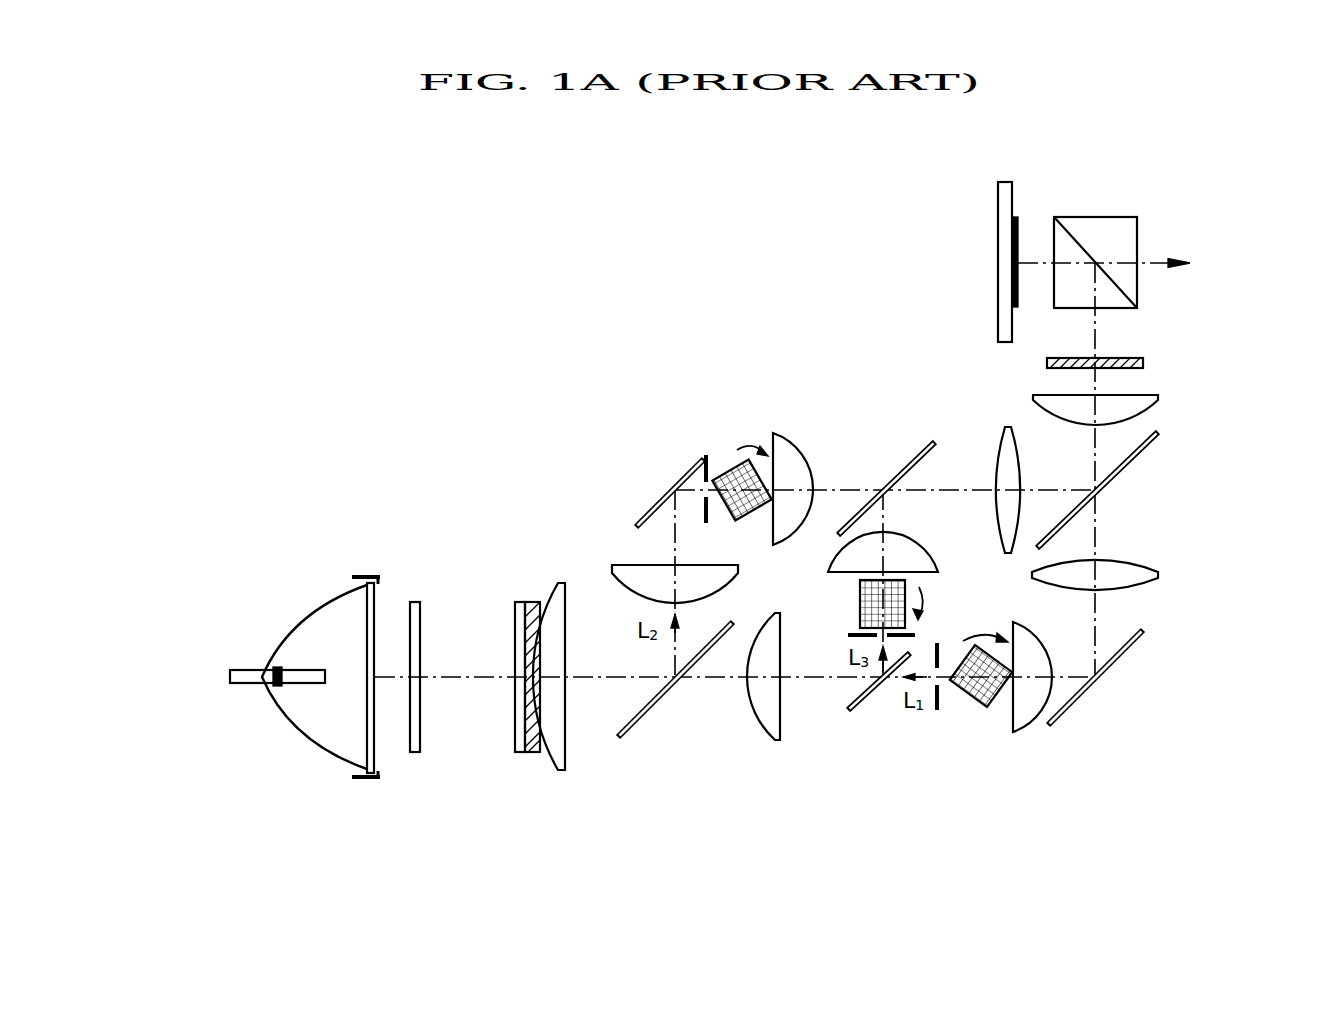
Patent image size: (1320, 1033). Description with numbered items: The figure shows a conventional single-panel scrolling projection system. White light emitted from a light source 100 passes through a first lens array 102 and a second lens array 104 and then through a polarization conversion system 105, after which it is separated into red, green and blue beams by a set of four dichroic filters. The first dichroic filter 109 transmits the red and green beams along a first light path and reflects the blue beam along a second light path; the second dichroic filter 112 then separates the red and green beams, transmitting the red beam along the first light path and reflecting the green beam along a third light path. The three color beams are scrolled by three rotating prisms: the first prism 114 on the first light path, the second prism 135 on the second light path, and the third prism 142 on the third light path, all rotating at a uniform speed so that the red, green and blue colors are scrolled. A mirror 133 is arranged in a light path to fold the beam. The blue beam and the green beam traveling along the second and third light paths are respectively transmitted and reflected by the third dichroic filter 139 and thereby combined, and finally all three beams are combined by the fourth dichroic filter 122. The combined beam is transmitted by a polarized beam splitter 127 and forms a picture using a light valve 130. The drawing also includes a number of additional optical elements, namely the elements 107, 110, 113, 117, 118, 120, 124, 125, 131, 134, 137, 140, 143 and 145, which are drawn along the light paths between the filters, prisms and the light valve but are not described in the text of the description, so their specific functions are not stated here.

The light source 100 is at (317, 625).
The first lens array 102 is at (415, 602).
The second lens array 104 is at (517, 752).
The polarization conversion system 105 is at (532, 752).
The collimating lens 107 is at (557, 743).
The first dichroic filter 109 is at (653, 705).
The lens 110 is at (778, 742).
The second dichroic filter 112 is at (860, 702).
The slit 113 is at (937, 713).
The first prism 114 is at (987, 707).
The lens 117 is at (1022, 713).
The mirror 118 is at (1087, 688).
The lens 120 is at (1158, 575).
The fourth dichroic filter 122 is at (1120, 475).
The lens 124 is at (1155, 398).
The polarizer plate 125 is at (1143, 362).
The polarized beam splitter 127 is at (1093, 218).
The light valve 130 is at (1018, 233).
The lens 131 is at (622, 567).
The mirror 133 is at (662, 495).
The slit 134 is at (702, 457).
The second prism 135 is at (733, 467).
The lens 137 is at (780, 443).
The third dichroic filter 139 is at (903, 470).
The lens 140 is at (1007, 430).
The third prism 142 is at (860, 600).
The slit 143 is at (917, 637).
The lens 145 is at (923, 565).